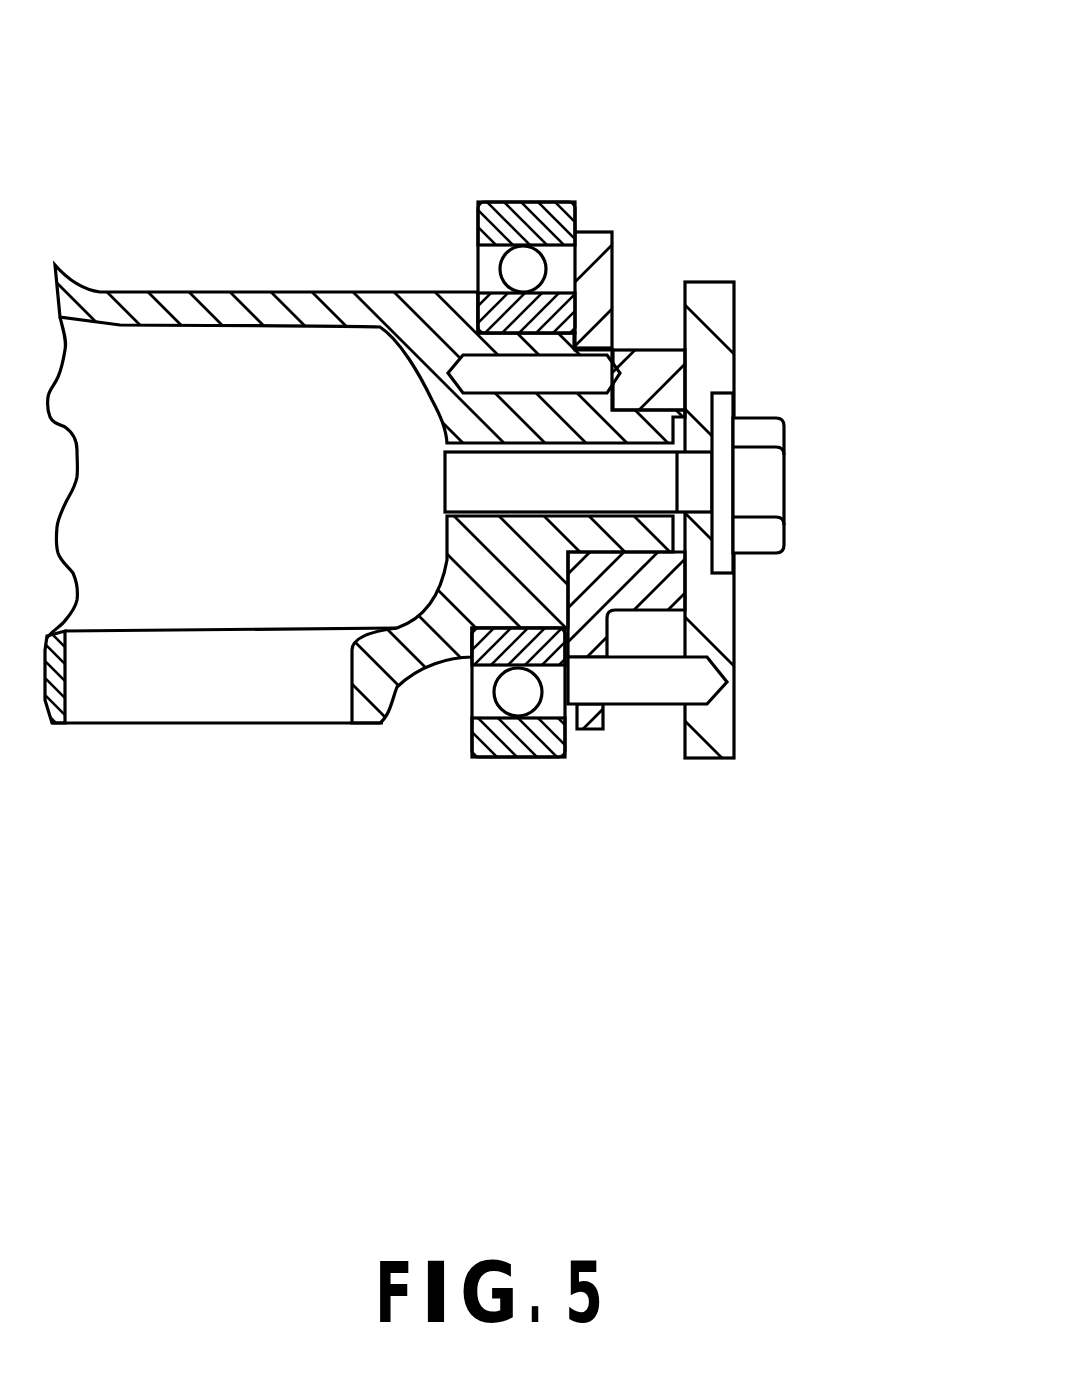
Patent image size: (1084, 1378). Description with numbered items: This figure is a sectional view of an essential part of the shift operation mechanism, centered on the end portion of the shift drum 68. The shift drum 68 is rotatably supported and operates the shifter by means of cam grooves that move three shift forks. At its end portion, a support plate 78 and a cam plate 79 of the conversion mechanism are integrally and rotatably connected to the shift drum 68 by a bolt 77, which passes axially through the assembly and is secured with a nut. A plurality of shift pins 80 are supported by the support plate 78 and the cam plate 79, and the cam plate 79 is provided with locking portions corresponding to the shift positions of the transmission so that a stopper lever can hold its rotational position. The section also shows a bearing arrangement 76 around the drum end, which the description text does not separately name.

The shift drum 68 is at (270, 300).
The bearing 76 is at (540, 203).
The bolt 77 is at (760, 480).
The support plate 78 is at (593, 277).
The cam plate 79 is at (712, 310).
The shift pins 80 is at (638, 687).